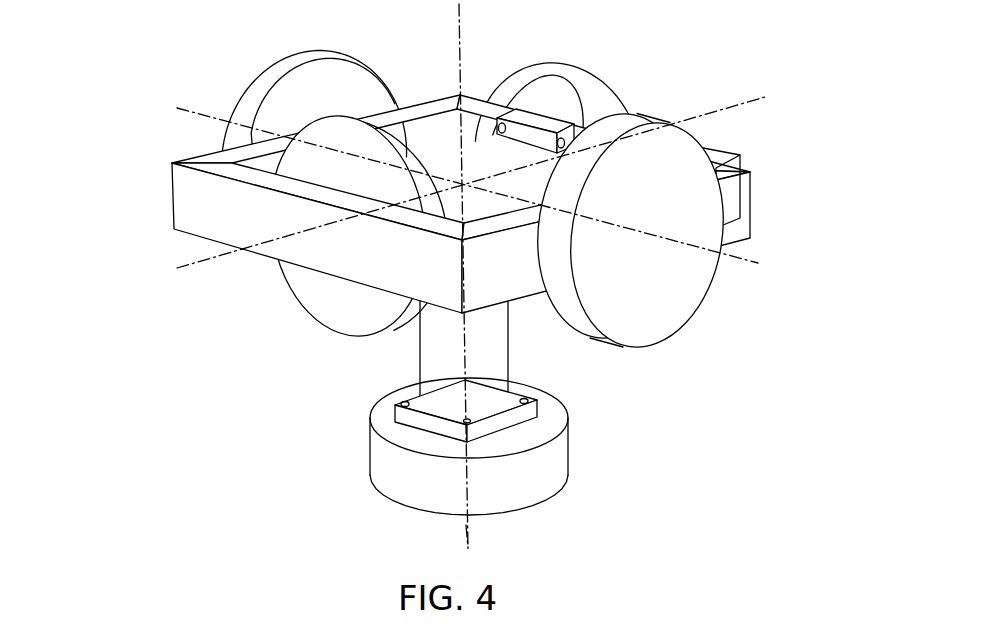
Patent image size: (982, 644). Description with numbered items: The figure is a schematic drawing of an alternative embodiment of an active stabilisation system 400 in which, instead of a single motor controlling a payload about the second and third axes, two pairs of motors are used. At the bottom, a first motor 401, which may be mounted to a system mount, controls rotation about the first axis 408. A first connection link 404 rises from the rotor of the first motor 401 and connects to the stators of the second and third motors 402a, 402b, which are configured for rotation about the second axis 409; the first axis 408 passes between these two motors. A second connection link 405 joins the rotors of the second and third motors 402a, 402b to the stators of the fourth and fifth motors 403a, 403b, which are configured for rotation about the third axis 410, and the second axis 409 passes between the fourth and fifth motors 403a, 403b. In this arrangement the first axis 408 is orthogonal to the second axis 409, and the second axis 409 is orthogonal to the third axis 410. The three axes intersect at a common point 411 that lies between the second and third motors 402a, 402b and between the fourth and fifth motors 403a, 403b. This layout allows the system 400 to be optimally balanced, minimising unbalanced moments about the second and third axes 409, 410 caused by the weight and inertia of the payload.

The stabilisation system 400 is at (435, 281).
The first motor 401 is at (378, 458).
The second motor 402a is at (324, 305).
The third motor 402b is at (585, 83).
The fourth motor 403a is at (288, 66).
The fifth motor 403b is at (673, 298).
The first connection link 404 is at (495, 345).
The second connection link 405 is at (435, 222).
The first axis 408 is at (467, 528).
The second axis 409 is at (192, 260).
The third axis 410 is at (745, 262).
The common point 411 is at (462, 186).